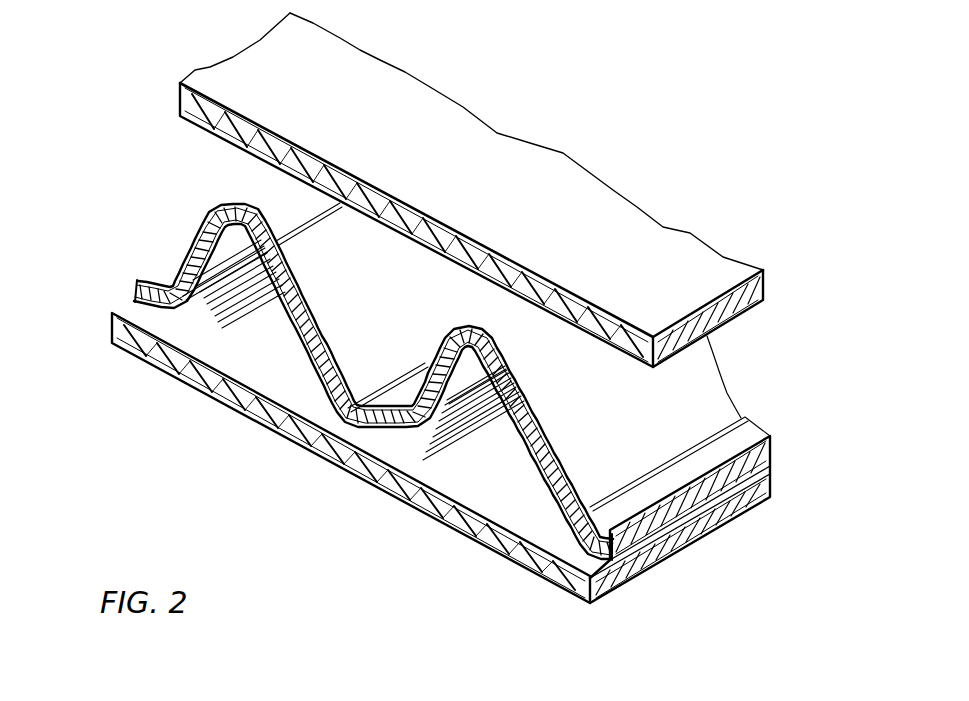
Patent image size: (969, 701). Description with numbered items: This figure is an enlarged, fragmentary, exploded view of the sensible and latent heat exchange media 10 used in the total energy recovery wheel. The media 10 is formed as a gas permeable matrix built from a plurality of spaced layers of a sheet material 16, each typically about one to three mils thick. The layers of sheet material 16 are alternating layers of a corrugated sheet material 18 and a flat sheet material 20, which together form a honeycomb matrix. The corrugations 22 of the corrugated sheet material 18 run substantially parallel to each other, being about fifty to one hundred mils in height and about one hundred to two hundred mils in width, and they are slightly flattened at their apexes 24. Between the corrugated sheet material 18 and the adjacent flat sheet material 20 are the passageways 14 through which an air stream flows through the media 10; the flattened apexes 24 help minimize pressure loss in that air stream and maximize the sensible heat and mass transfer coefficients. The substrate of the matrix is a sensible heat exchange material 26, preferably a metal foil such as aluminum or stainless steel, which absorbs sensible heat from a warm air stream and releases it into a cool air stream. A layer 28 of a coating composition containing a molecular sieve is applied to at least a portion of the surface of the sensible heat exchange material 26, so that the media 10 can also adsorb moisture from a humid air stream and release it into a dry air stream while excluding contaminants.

The sensible and latent heat exchange media 10 is at (560, 126).
The passageways 14 is at (270, 338).
The sheet material 16 is at (710, 265).
The corrugated sheet material 18 is at (703, 387).
The flat sheet material 20 is at (603, 213).
The corrugations 22 is at (318, 300).
The apexes 24 is at (247, 190).
The sensible heat exchange material 26 is at (158, 293).
The layer of coating composition 28 is at (186, 120).